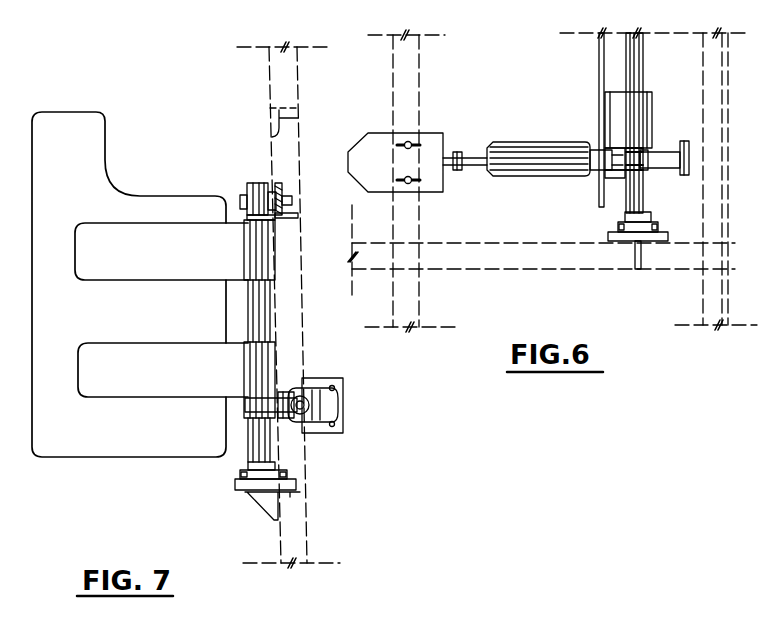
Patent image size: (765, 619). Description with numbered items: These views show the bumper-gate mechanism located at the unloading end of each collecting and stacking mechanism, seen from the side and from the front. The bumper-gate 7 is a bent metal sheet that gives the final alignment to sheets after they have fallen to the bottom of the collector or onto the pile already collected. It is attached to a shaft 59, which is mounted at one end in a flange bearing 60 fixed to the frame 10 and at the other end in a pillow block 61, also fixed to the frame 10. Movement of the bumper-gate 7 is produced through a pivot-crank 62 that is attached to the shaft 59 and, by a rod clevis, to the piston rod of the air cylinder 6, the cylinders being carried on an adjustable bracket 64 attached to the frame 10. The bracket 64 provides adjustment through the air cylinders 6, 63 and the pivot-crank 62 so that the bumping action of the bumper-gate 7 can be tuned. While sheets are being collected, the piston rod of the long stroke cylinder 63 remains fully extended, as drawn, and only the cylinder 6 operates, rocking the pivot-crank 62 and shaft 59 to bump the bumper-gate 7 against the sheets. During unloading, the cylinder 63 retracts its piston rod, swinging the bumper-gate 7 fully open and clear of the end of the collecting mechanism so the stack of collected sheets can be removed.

In FIG. 6, the air cylinder 6 is at (619, 176).
In FIG. 7, the bumper-gate 7 is at (140, 284).
In FIG. 6, the bumper-gate 7 is at (598, 66).
In FIG. 7, the frame 10 is at (286, 86).
In FIG. 6, the frame 10 is at (720, 104).
In FIG. 7, the shaft 59 is at (248, 300).
In FIG. 6, the shaft 59 is at (645, 55).
In FIG. 7, the flange bearing 60 is at (290, 470).
In FIG. 6, the flange bearing 60 is at (655, 216).
In FIG. 7, the pillow block 61 is at (243, 196).
In FIG. 7, the pivot-crank 62 is at (283, 418).
In FIG. 6, the pivot-crank 62 is at (655, 152).
In FIG. 7, the long stroke cylinder 63 is at (339, 397).
In FIG. 6, the long stroke cylinder 63 is at (540, 142).
In FIG. 6, the adjustable bracket 64 is at (428, 137).